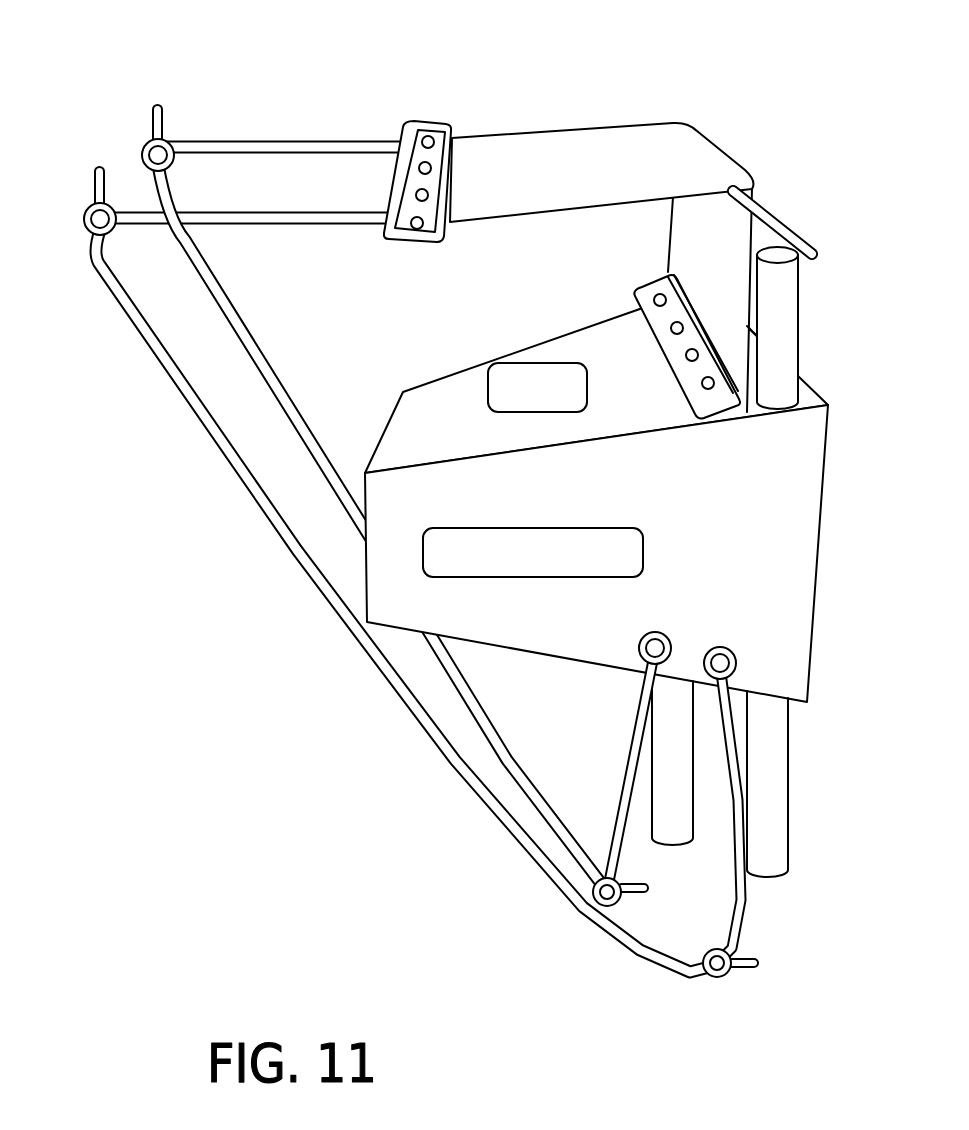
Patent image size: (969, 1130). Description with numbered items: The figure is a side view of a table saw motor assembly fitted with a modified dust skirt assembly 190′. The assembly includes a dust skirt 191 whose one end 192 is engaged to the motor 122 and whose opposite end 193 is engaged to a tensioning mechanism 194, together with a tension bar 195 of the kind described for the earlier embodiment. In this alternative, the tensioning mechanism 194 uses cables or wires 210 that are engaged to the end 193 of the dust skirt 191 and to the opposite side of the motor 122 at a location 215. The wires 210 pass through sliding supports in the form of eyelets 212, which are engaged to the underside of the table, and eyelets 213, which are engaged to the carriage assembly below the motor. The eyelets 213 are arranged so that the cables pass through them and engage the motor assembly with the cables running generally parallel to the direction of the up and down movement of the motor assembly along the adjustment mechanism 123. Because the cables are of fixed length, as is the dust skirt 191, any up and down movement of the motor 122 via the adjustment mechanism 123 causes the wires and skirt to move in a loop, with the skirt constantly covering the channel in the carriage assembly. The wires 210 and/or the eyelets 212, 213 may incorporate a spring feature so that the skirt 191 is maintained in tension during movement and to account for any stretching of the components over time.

The motor 122 is at (527, 355).
The adjustment mechanism 123 is at (800, 317).
The dust skirt assembly 190′ is at (625, 123).
The dust skirt 191 is at (565, 210).
The one end of the dust skirt 192 is at (642, 332).
The opposite end of the dust skirt 193 is at (440, 122).
The tensioning mechanism 194 is at (390, 115).
The tension bar 195 is at (790, 220).
The cables or wires 210 is at (325, 608).
The eyelets 212 is at (117, 158).
The eyelets 213 is at (680, 980).
The location 215 is at (702, 645).